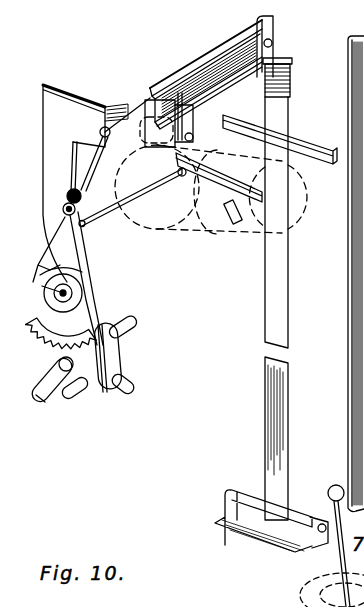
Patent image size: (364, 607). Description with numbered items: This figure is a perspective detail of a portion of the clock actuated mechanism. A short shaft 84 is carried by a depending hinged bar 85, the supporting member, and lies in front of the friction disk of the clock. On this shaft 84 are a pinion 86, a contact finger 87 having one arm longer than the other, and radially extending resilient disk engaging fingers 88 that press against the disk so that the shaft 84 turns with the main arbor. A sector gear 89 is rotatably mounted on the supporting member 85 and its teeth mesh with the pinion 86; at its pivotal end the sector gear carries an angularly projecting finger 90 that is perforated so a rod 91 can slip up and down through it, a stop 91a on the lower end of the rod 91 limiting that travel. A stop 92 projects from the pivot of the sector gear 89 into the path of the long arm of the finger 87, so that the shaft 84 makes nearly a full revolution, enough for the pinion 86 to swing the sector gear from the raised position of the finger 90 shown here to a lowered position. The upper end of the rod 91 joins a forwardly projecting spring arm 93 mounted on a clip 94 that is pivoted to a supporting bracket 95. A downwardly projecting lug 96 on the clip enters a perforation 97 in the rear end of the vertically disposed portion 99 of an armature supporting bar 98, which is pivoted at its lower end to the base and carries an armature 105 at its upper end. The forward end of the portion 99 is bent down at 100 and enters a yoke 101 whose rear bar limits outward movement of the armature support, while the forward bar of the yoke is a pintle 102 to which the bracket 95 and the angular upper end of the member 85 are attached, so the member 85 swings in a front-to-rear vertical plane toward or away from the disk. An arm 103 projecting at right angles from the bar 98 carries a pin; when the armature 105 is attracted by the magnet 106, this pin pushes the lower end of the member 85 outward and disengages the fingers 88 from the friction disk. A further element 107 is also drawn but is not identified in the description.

The short shaft 84 is at (60, 367).
The depending hinged bar 85 is at (50, 205).
The pinion 86 is at (102, 387).
The contact finger 87 is at (52, 395).
The resilient disk engaging fingers 88 is at (128, 380).
The sector gear 89 is at (93, 310).
The angularly projecting finger 90 is at (43, 264).
The rod 91 is at (86, 181).
The stop 91a is at (57, 338).
The stop 92 is at (100, 268).
The forwardly projecting spring arm 93 is at (210, 61).
The clip 94 is at (275, 30).
The supporting bracket 95 is at (172, 81).
The downwardly projecting lug 96 is at (273, 62).
The perforation 97 is at (293, 68).
The armature supporting bar 98 is at (289, 302).
The vertically disposed portion 99 is at (232, 87).
The downwardly bent forward end 100 is at (152, 95).
The yoke 101 is at (193, 143).
The pintle 102 is at (203, 165).
The arm 103 is at (230, 205).
The armature 105 is at (320, 139).
The magnet 106 is at (297, 205).
The rod 107 is at (143, 210).